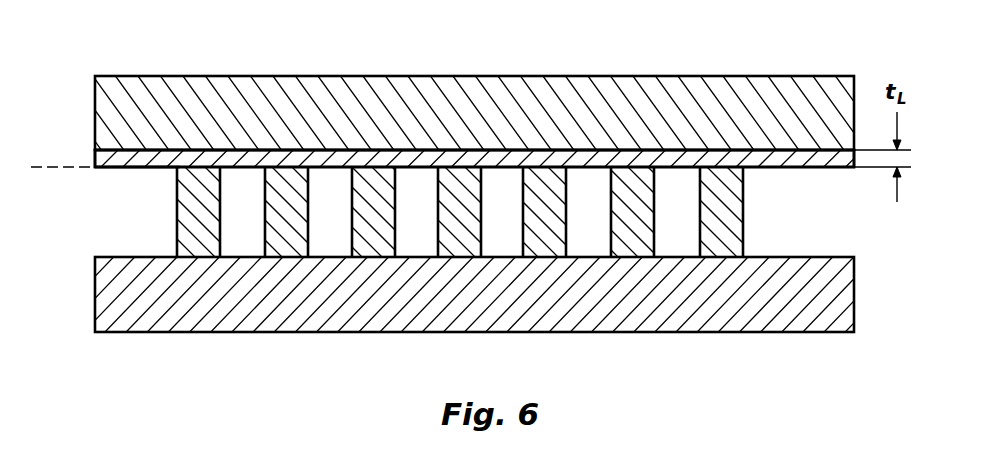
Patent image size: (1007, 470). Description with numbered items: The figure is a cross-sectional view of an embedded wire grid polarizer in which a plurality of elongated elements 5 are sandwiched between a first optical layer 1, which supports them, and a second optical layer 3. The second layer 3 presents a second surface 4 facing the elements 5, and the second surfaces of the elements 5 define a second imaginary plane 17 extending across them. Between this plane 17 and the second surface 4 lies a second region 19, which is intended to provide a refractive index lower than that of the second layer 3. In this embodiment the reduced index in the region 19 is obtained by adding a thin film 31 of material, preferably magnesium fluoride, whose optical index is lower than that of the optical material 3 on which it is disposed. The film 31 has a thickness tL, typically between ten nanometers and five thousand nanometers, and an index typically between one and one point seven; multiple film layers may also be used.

The first optical layer 1 is at (717, 318).
The second optical layer 3 is at (521, 92).
The second surface 4 is at (117, 151).
The elongated elements 5 is at (372, 197).
The second imaginary plane 17 is at (35, 167).
The second region 19 is at (125, 158).
The thin film 31 is at (645, 160).